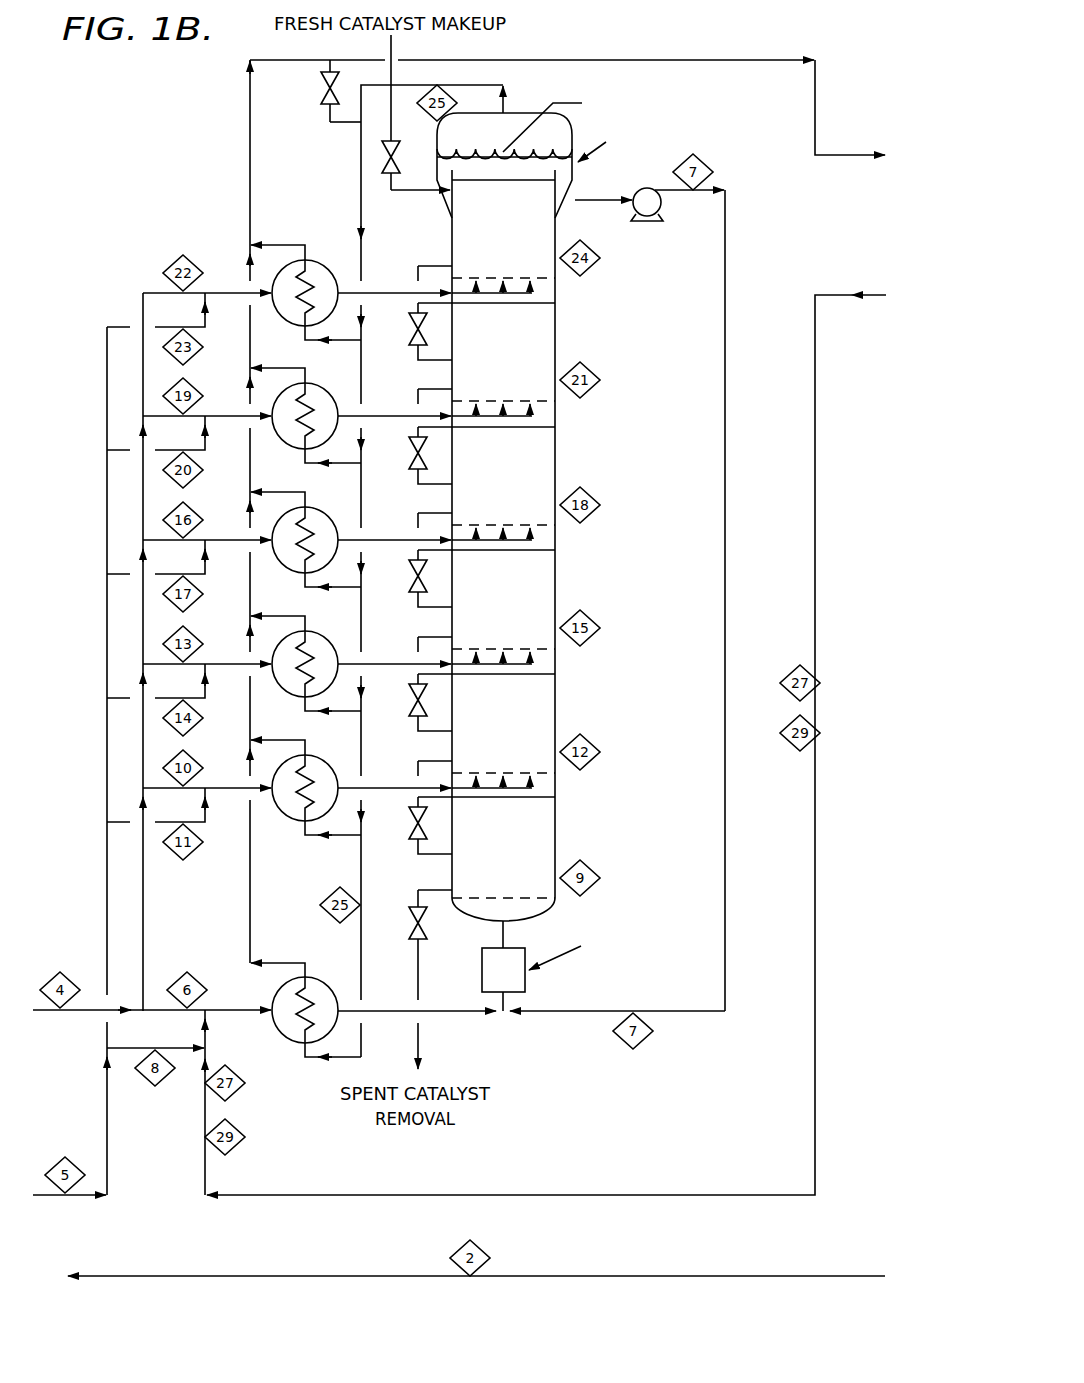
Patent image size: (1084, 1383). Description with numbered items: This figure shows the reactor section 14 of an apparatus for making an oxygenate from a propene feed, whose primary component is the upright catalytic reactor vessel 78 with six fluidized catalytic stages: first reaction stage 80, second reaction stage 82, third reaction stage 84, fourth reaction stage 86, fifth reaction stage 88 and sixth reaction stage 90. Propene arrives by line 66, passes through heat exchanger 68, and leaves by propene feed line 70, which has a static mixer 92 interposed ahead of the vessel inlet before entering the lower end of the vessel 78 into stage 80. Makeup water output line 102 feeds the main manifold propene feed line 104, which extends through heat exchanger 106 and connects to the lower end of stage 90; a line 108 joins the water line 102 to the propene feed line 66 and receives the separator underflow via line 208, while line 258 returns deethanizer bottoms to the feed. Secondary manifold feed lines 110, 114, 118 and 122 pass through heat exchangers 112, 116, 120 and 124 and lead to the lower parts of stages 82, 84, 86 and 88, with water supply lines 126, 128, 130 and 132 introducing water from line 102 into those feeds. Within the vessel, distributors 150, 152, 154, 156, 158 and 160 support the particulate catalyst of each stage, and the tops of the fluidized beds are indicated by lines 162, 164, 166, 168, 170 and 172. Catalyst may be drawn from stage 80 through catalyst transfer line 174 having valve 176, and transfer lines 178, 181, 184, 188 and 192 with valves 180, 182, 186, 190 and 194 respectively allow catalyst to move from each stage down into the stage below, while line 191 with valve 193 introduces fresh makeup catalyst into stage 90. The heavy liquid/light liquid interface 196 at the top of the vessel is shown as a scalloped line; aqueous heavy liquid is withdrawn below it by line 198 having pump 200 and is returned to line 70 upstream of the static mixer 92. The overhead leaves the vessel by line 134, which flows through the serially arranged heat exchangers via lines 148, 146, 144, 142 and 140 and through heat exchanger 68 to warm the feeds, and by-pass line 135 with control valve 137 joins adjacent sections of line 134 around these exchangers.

The reactor section 14 is at (196, 162).
The overhead line 134 is at (250, 126).
The control valve 137 is at (320, 96).
The by-pass line 135 is at (333, 124).
The selectively openable valve 193 is at (382, 160).
The heavy liquid/light liquid interface 196 is at (434, 144).
The makeup catalyst line 191 is at (432, 196).
The main manifold propene feed line 104 is at (229, 291).
The heat exchanger 106 is at (319, 261).
The upper level of fluidized bed 172 is at (574, 191).
The pump 200 is at (660, 209).
The sixth reaction stage 90 is at (555, 232).
The fifth reaction stage 88 is at (555, 351).
The fourth reaction stage 86 is at (555, 491).
The third reaction stage 84 is at (555, 602).
The second reaction stage 82 is at (555, 724).
The first reaction stage 80 is at (555, 863).
The distributor 160 is at (555, 278).
The distributor 158 is at (555, 401).
The distributor 156 is at (555, 525).
The distributor 154 is at (555, 649).
The distributor 152 is at (555, 773).
The distributor 150 is at (555, 893).
The upper level of fluidized bed 170 is at (555, 303).
The upper level of fluidized bed 168 is at (555, 427).
The upper level of fluidized bed 166 is at (555, 550).
The upper level of fluidized bed 164 is at (555, 674).
The top of fluidized catalytic bed 162 is at (555, 797).
The transfer line 192 is at (414, 312).
The valve 194 is at (414, 340).
The transfer line 188 is at (414, 436).
The valve 190 is at (414, 464).
The transfer line 184 is at (414, 559).
The valve 186 is at (414, 587).
The transfer line 181 is at (414, 683).
The selectively openable valve 182 is at (414, 711).
The transfer line 178 is at (414, 806).
The selectively manipulable valve 180 is at (414, 834).
The selectively openable valve 176 is at (409, 918).
The catalyst transfer line 174 is at (437, 891).
The secondary manifold feed line 122 is at (229, 414).
The secondary manifold feed line 118 is at (229, 538).
The secondary manifold feed line 114 is at (229, 662).
The secondary manifold feed line 110 is at (229, 786).
The line 148 is at (326, 342).
The line 146 is at (326, 465).
The line 144 is at (326, 589).
The line 142 is at (328, 713).
The line 140 is at (336, 838).
The heat exchanger 124 is at (283, 440).
The heat exchanger 120 is at (283, 564).
The heat exchanger 116 is at (283, 688).
The heat exchanger 112 is at (283, 812).
The catalytic reactor vessel 78 is at (575, 462).
The propene feed line 70 is at (505, 938).
The static mixer 92 is at (527, 982).
The heat exchanger 68 is at (316, 982).
The propene feed line 66 is at (83, 1013).
The line 108 is at (118, 1050).
The makeup water output line 102 is at (128, 326).
The water supply line 132 is at (120, 450).
The water supply line 130 is at (120, 574).
The water supply line 128 is at (120, 698).
The water supply line 126 is at (120, 822).
The heavy liquid line 198 is at (728, 472).
The line 208 is at (658, 1195).
The line 258 is at (328, 1276).